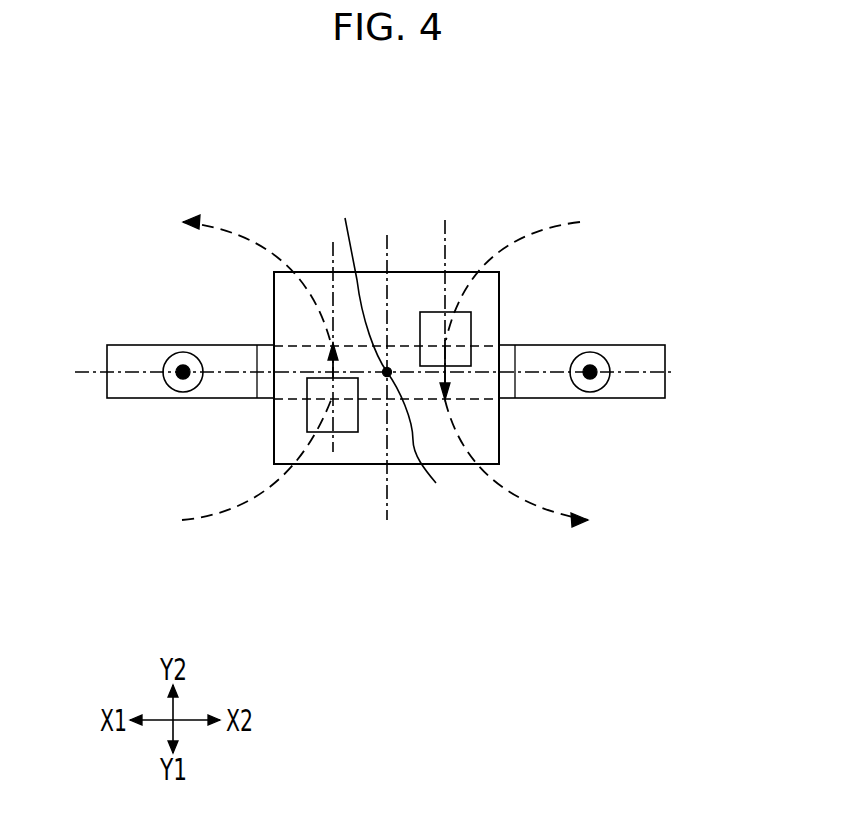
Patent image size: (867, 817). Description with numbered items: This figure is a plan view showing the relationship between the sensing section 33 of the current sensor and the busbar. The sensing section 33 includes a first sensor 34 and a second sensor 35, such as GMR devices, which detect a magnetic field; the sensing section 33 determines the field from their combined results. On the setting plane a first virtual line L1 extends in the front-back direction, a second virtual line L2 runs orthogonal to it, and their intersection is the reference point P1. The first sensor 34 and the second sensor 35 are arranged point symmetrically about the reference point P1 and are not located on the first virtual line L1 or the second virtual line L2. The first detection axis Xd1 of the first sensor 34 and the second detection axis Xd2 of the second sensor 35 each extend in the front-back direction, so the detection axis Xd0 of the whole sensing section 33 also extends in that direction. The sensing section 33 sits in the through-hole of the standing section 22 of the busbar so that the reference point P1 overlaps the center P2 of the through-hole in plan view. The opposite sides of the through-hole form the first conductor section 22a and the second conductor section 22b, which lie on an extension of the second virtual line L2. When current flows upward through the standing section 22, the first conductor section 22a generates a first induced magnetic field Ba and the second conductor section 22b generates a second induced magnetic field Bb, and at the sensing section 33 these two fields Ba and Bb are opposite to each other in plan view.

The sensing section 33 is at (273, 298).
The first sensor 34 is at (352, 430).
The second sensor 35 is at (470, 328).
The standing section 22 is at (398, 415).
The first conductor section 22a is at (127, 389).
The second conductor section 22b is at (642, 390).
The first detection axis Xd1 is at (333, 259).
The detection axis Xd0 is at (387, 246).
The second detection axis Xd2 is at (446, 244).
The reference point P1 is at (363, 282).
The center P2 is at (428, 445).
The first virtual line L1 is at (387, 513).
The second virtual line L2 is at (293, 375).
The first induced magnetic field Ba is at (260, 352).
The second induced magnetic field Bb is at (514, 391).